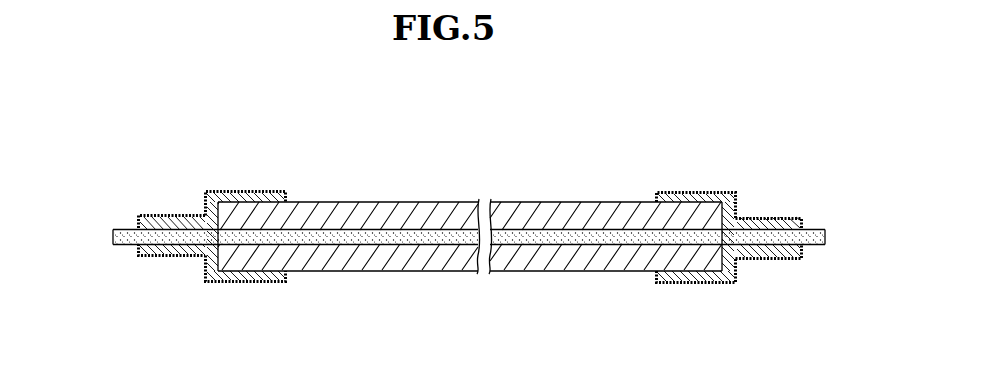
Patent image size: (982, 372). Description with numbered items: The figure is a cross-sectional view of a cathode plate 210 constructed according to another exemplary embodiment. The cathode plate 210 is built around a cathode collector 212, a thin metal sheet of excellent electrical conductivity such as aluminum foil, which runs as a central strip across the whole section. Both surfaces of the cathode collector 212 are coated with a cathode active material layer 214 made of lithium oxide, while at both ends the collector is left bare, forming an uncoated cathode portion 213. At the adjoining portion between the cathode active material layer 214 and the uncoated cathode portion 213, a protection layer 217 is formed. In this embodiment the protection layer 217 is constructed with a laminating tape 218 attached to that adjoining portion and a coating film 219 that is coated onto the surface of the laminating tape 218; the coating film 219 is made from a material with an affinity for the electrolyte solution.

The cathode plate 210 is at (782, 140).
The cathode collector 212 is at (127, 228).
The uncoated cathode portion 213 is at (203, 236).
The cathode active material layer 214 is at (406, 207).
The protection layer 217 is at (294, 183).
The laminating tape 218 is at (271, 190).
The coating film 219 is at (225, 189).